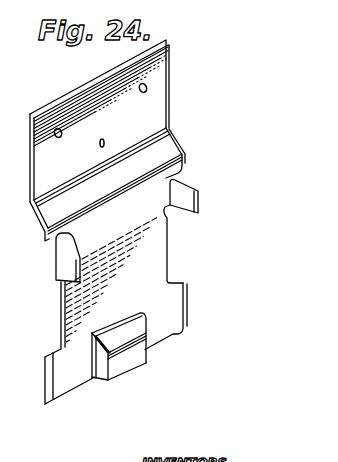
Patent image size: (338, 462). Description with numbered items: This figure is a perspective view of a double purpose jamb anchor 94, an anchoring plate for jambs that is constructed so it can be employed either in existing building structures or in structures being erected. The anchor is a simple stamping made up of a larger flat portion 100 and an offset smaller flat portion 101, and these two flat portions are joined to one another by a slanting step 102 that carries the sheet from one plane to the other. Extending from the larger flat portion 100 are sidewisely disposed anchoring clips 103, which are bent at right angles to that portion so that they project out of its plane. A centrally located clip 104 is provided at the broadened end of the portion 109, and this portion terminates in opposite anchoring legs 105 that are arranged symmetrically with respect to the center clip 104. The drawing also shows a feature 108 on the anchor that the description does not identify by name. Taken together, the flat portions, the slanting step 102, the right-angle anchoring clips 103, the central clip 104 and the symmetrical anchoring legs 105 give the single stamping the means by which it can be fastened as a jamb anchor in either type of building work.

The double purpose jamb anchor 94 is at (171, 93).
The larger flat portion 100 is at (170, 265).
The offset smaller flat portion 101 is at (31, 164).
The slanting step 102 is at (169, 149).
The anchoring clips 103 is at (199, 203).
The centrally located clip 104 is at (127, 366).
The anchoring legs 105 is at (185, 305).
The small hole 108 is at (105, 141).
The portion 109 is at (58, 128).